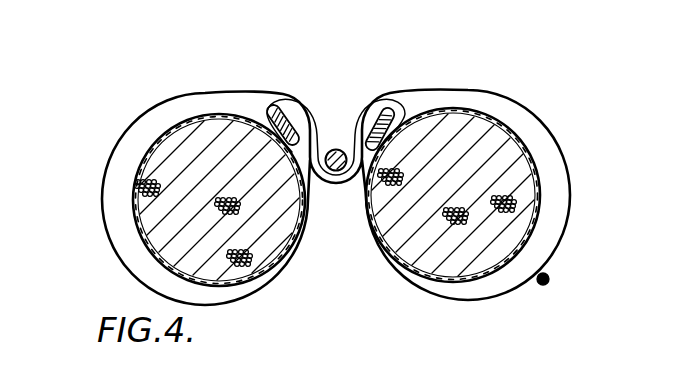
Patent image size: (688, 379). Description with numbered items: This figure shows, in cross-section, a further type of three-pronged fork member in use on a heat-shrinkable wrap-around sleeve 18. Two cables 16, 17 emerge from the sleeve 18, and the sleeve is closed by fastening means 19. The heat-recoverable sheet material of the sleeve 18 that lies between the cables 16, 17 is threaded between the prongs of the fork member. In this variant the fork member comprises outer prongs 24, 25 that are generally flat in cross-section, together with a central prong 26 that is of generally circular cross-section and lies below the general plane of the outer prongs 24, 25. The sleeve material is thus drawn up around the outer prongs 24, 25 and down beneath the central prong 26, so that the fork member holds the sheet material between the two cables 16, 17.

The cable 16 is at (150, 223).
The cable 17 is at (403, 238).
The heat-shrinkable wrap-around sleeve 18 is at (568, 178).
The fastening means 19 is at (543, 286).
The outer prong 24 is at (299, 108).
The outer prong 25 is at (372, 106).
The central prong 26 is at (337, 149).